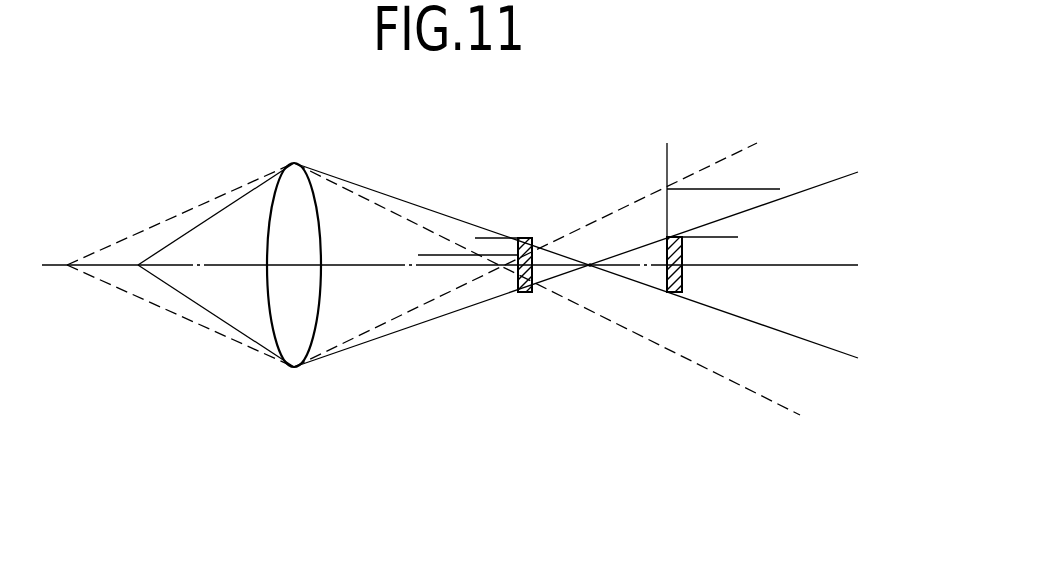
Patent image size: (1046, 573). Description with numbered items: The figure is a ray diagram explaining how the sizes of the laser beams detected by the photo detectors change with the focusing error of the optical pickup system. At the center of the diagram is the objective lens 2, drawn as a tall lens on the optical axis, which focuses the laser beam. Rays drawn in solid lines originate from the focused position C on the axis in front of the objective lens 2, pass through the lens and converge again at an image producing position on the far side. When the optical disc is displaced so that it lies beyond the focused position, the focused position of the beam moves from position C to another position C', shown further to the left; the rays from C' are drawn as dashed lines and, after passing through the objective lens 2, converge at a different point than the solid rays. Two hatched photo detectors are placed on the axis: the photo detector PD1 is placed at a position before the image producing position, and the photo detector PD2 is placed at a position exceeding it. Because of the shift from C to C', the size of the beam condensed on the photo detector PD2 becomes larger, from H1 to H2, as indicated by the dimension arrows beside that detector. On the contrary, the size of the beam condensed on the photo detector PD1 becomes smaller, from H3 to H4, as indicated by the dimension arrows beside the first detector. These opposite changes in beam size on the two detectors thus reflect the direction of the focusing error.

The objective lens 2 is at (290, 367).
The focused position C is at (487, 265).
The shifted focused position C' is at (424, 279).
The photo detector PD1 is at (525, 292).
The photo detector PD2 is at (672, 292).
The laser beam size H1 is at (724, 265).
The enlarged laser beam size H2 is at (753, 189).
The laser beam size H3 is at (488, 330).
The reduced laser beam size H4 is at (447, 333).